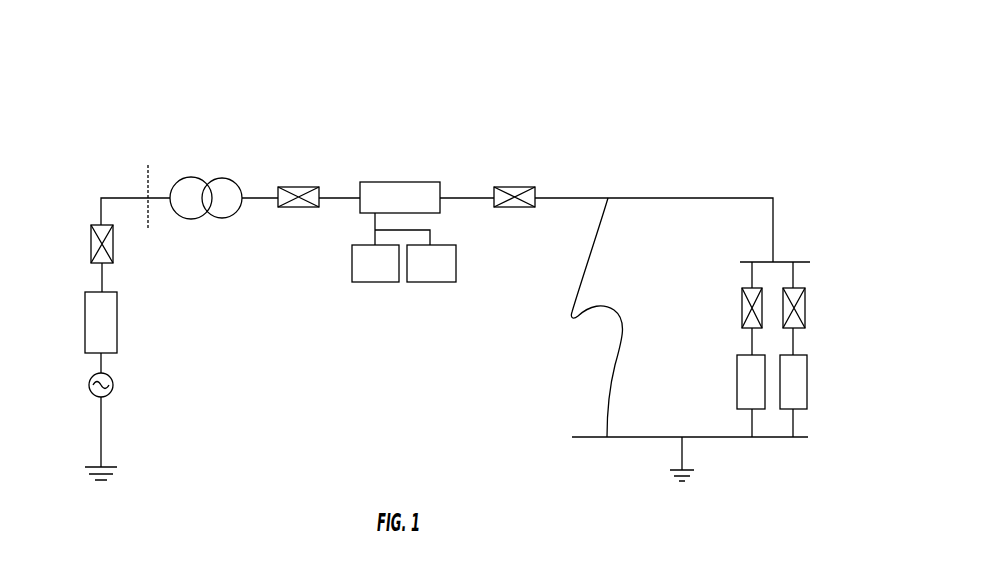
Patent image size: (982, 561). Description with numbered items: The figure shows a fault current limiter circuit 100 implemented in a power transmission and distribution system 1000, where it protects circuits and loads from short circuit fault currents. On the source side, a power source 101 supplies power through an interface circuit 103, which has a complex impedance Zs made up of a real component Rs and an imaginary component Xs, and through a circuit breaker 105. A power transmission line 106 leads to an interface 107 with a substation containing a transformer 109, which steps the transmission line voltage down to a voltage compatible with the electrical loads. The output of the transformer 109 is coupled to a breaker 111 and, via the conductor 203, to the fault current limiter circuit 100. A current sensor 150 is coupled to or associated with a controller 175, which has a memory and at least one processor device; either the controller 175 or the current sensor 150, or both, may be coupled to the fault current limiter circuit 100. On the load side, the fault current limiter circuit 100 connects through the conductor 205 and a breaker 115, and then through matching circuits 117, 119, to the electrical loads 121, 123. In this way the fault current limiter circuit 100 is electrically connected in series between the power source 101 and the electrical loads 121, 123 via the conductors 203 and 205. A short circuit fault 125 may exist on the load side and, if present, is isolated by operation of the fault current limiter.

The power transmission and distribution system 1000 is at (584, 70).
The power source 101 is at (92, 397).
The interface circuit 103 is at (85, 330).
The circuit breaker 105 is at (91, 250).
The power transmission line 106 is at (117, 194).
The interface 107 is at (150, 166).
The transformer 109 is at (233, 178).
The breaker 111 is at (299, 187).
The conductor 203 is at (351, 191).
The fault current limiter circuit 100 is at (430, 182).
The current sensor 150 is at (386, 272).
The controller 175 is at (442, 272).
The conductor 205 is at (476, 191).
The breaker 115 is at (523, 187).
The short circuit fault 125 is at (576, 288).
The matching circuit 117 is at (742, 310).
The matching circuit 119 is at (805, 310).
The electrical load 121 is at (737, 383).
The electrical load 123 is at (807, 383).